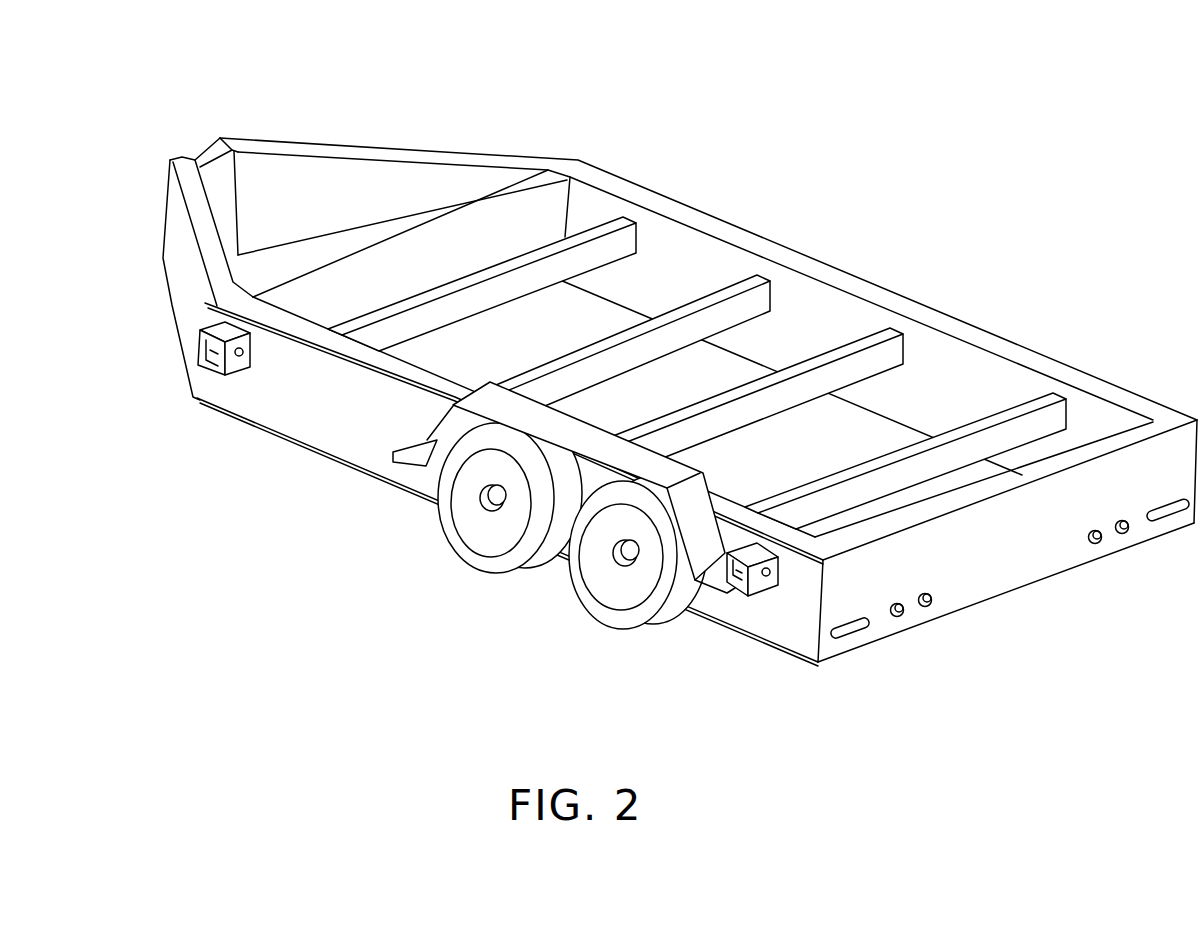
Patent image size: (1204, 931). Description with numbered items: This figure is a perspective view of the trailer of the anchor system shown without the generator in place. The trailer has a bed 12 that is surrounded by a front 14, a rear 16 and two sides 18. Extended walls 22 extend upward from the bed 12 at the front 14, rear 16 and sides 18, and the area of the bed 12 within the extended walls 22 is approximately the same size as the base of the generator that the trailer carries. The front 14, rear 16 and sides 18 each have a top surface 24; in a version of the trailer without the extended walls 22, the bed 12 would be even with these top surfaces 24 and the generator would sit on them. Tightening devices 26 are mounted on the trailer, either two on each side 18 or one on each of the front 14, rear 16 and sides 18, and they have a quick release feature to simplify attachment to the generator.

The bed 12 is at (494, 306).
The front 14 is at (380, 306).
The rear 16 is at (1006, 563).
The side 18 is at (332, 430).
The extended wall 22 is at (622, 212).
The top surface 24 is at (527, 187).
The tightening device 26 is at (205, 373).